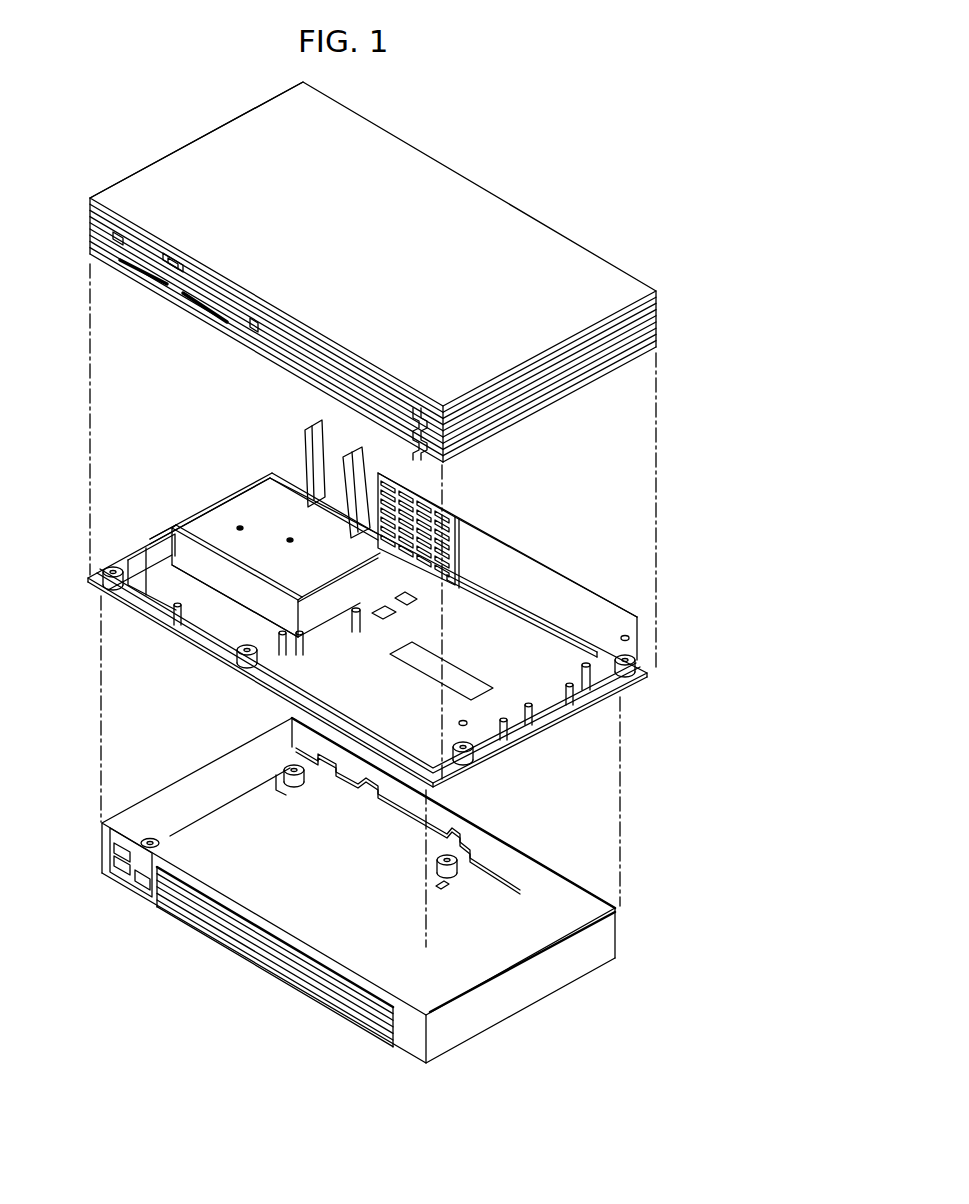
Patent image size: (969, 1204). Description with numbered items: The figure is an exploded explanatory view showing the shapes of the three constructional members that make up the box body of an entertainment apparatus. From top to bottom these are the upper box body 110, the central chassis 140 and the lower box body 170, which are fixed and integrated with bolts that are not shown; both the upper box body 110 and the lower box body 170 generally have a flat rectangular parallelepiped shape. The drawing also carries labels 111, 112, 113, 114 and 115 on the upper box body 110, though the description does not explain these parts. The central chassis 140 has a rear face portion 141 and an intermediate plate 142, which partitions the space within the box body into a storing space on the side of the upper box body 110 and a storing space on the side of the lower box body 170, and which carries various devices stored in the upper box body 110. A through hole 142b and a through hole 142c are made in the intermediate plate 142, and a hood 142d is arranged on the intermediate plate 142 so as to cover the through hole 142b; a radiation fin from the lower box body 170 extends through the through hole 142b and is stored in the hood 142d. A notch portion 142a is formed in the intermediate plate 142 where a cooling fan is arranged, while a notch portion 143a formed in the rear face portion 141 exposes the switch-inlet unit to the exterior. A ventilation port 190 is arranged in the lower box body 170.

The upper box body 110 is at (105, 132).
The top plate 111 is at (493, 197).
The right side wall 112 is at (656, 316).
The rear edge 113 is at (200, 142).
The slots 114 is at (237, 323).
The step portion 115 is at (372, 393).
The central chassis 140 is at (148, 511).
The rear face portion 141 is at (547, 577).
The intermediate plate 142 is at (433, 786).
The notch portion 142a is at (423, 523).
The through hole 142b is at (225, 615).
The through hole 142c is at (465, 680).
The hood 142d is at (213, 560).
The notch portion 143a is at (342, 478).
The lower box body 170 is at (162, 770).
The ventilation port 190 is at (327, 980).